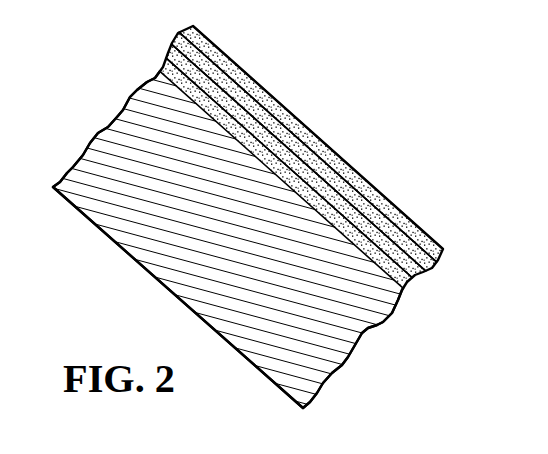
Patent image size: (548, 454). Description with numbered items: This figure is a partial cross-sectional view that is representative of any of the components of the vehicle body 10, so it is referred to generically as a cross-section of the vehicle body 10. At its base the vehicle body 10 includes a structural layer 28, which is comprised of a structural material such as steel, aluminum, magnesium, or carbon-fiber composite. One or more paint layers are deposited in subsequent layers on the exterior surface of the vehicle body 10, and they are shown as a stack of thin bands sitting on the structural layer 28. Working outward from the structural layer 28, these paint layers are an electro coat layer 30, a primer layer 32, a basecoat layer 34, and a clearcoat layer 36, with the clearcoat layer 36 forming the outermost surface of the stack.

The vehicle body 10 is at (402, 64).
The structural layer 28 is at (378, 323).
The electro coat layer 30 is at (338, 213).
The primer layer 32 is at (307, 170).
The basecoat layer 34 is at (277, 125).
The clearcoat layer 36 is at (248, 80).